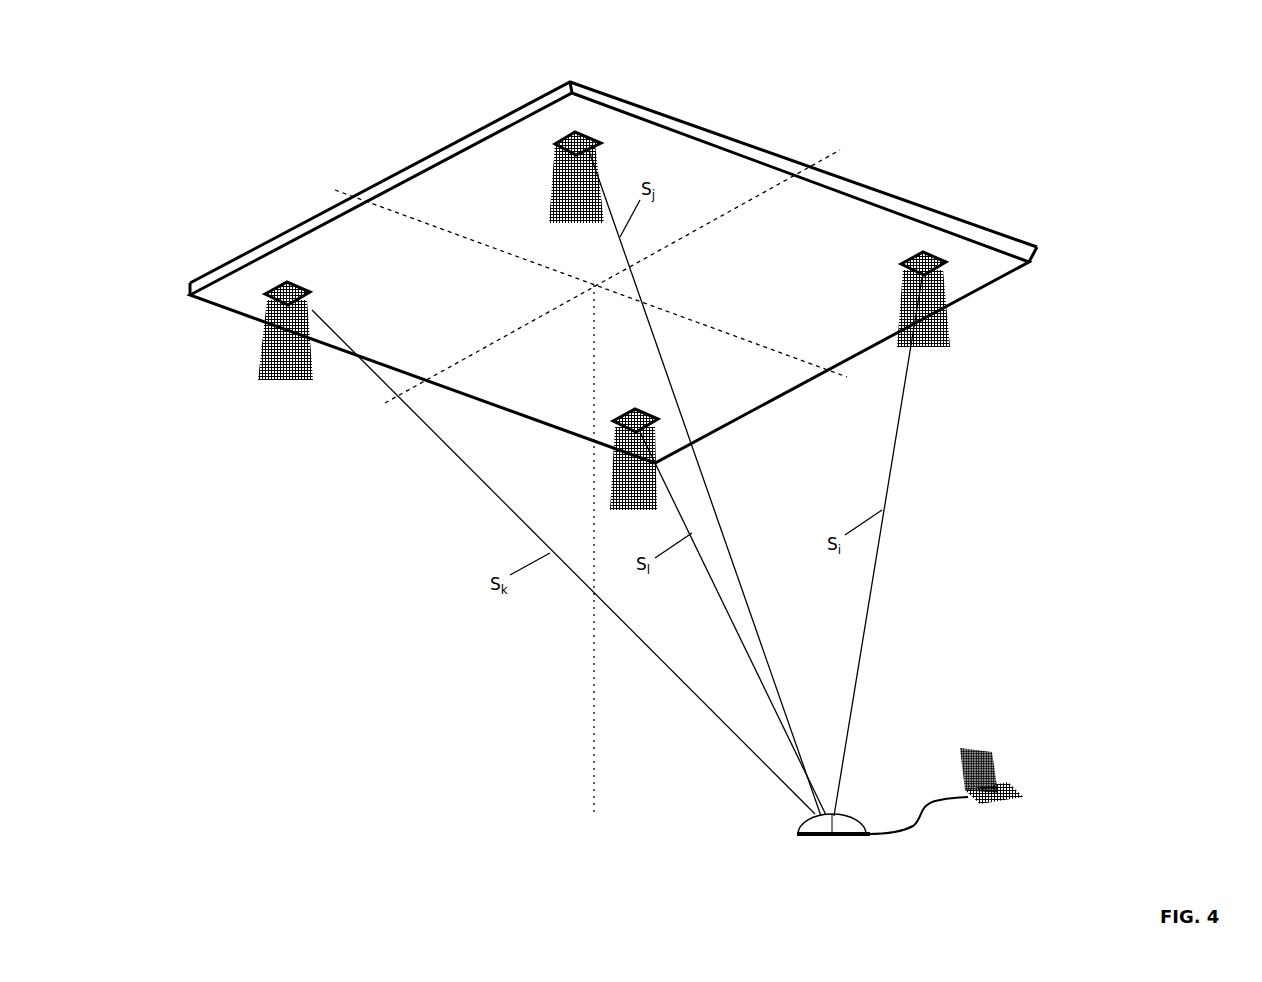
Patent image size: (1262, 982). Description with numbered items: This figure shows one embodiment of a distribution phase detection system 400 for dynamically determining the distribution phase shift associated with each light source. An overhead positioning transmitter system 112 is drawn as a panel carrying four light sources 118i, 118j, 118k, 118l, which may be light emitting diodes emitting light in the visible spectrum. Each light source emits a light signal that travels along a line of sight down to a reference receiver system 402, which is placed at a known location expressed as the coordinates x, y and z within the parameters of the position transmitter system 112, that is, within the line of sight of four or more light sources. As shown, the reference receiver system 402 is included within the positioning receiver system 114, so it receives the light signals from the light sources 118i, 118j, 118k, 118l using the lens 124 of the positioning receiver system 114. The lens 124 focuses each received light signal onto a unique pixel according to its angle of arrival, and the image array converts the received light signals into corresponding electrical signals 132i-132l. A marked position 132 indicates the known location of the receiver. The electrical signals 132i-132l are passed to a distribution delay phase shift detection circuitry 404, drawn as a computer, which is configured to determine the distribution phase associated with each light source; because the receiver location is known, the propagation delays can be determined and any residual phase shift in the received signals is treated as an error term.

The distribution phase detection system 400 is at (271, 123).
The positioning transmitter system 112 is at (996, 320).
The positioning receiver system 114 is at (992, 678).
The light source 118i is at (905, 255).
The light source 118j is at (560, 150).
The light source 118k is at (305, 290).
The light source 118l is at (625, 412).
The lens 124 is at (857, 815).
The device position (x,y,z) 132 is at (802, 836).
The electrical signals 132i-132l is at (913, 831).
The reference receiver system 402 is at (993, 839).
The distribution delay phase shift detection circuitry 404 is at (1007, 782).